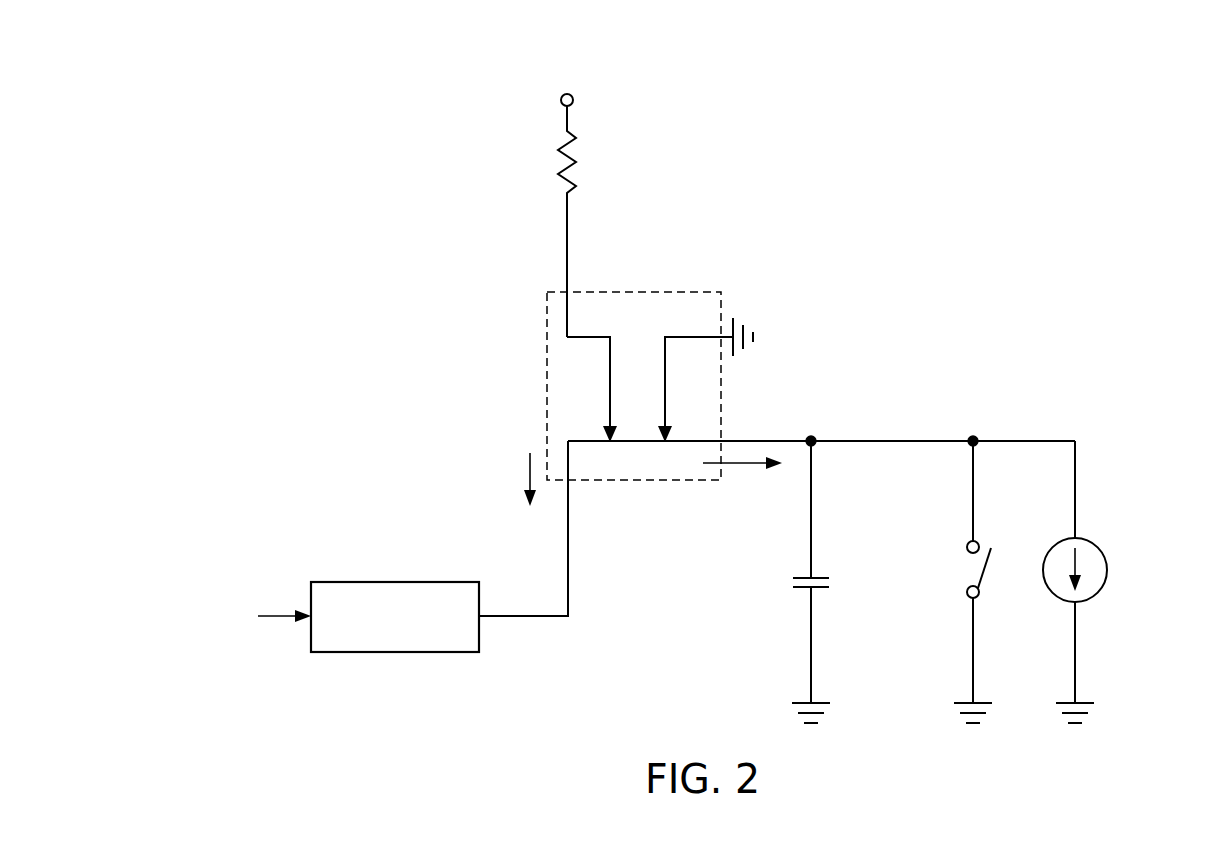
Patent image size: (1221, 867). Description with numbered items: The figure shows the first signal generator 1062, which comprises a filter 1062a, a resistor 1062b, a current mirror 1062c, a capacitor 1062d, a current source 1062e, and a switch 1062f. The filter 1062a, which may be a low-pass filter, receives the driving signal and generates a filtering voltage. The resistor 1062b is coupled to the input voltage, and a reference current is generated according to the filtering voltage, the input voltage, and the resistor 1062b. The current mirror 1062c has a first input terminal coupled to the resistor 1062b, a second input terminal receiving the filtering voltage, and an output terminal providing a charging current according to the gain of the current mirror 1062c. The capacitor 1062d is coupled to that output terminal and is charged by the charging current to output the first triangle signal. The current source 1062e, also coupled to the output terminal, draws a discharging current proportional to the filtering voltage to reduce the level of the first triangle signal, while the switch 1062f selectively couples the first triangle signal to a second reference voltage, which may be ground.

The first signal generator 1062 is at (272, 95).
The filter 1062a is at (397, 581).
The resistor 1062b is at (580, 170).
The current mirror 1062c is at (547, 383).
The capacitor 1062d is at (793, 582).
The current source 1062e is at (1103, 588).
The switch 1062f is at (968, 594).